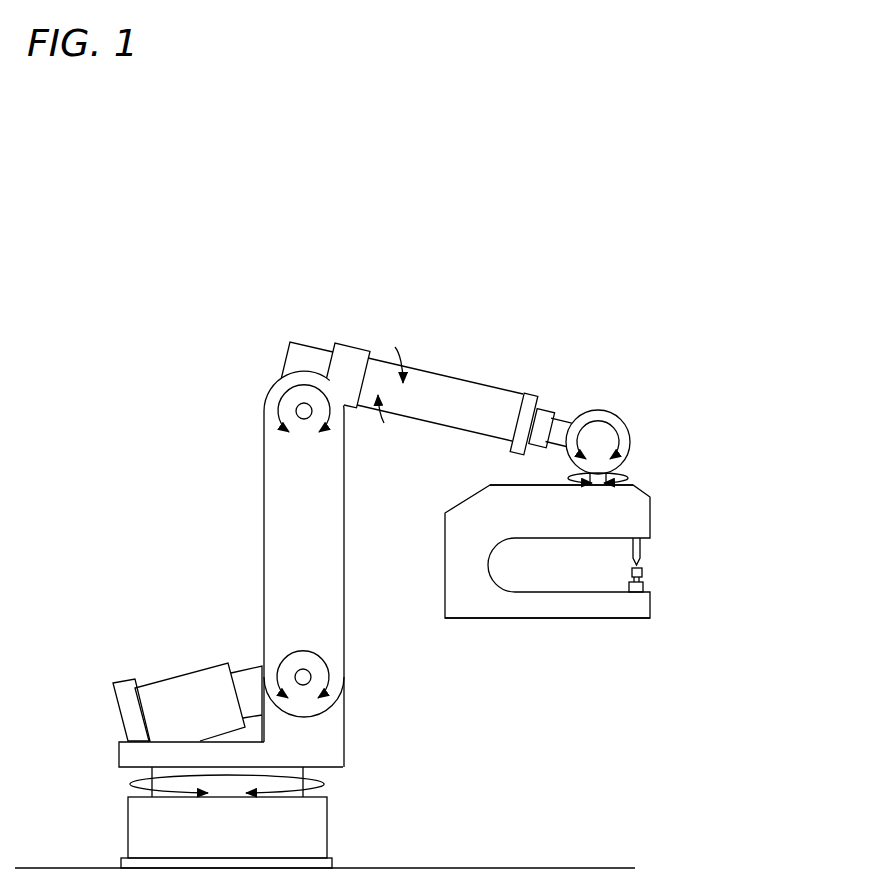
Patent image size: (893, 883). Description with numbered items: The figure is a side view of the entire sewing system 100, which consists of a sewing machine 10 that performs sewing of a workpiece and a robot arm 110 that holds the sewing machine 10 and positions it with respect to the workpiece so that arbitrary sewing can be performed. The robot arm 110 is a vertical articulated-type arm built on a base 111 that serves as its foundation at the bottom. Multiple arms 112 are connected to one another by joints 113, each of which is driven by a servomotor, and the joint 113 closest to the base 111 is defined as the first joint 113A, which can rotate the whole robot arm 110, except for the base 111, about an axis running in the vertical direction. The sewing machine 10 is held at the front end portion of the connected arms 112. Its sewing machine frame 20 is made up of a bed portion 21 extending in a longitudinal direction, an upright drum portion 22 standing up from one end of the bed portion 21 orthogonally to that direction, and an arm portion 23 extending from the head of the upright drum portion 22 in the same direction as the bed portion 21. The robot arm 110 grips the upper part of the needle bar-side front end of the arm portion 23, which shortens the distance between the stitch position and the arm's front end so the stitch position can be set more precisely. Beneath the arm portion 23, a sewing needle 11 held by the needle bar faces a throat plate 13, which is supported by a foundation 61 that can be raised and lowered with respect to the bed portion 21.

The sewing system 100 is at (235, 293).
The robot arm 110 is at (150, 463).
The base 111 is at (128, 830).
The arm 112 is at (266, 530).
The joint 113 is at (285, 394).
The first joint 113A is at (325, 782).
The sewing machine 10 is at (683, 423).
The sewing machine frame 20 is at (583, 678).
The bed portion 21 is at (553, 607).
The upright drum portion 22 is at (468, 577).
The arm portion 23 is at (518, 532).
The sewing needle 11 is at (640, 560).
The throat plate 13 is at (643, 573).
The foundation 61 is at (645, 588).